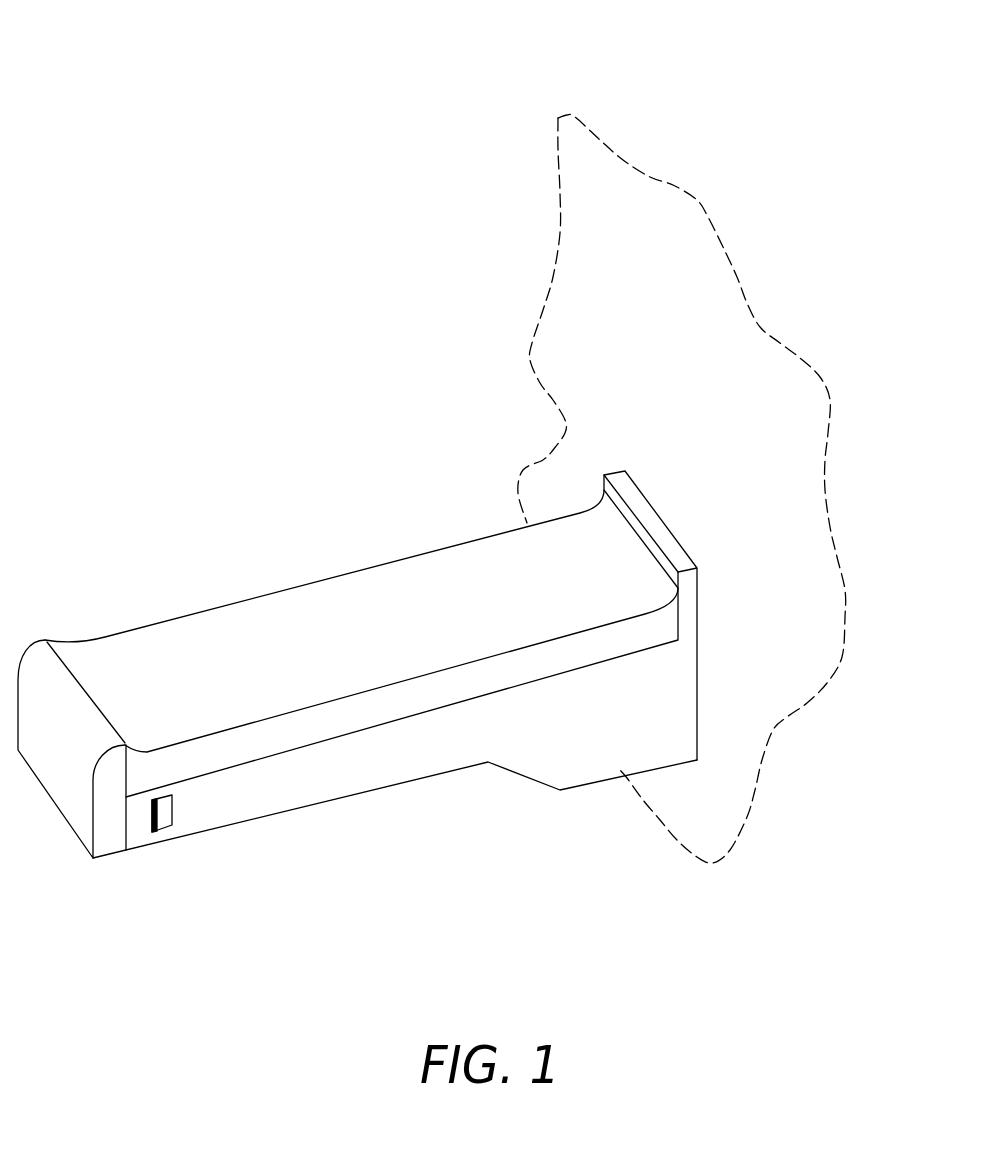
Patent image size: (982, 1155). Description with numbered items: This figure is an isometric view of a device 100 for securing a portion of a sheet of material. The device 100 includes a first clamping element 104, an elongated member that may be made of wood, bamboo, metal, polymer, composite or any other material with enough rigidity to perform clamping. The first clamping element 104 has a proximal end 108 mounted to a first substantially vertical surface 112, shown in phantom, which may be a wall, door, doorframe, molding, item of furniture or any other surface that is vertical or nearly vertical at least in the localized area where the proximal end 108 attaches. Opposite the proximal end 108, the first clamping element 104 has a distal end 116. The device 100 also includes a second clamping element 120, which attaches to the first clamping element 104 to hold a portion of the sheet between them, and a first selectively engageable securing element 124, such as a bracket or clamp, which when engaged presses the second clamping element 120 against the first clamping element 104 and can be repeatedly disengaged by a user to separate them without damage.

The device 100 is at (247, 96).
The first clamping element 104 is at (570, 742).
The proximal end 108 is at (697, 702).
The first substantially vertical surface 112 is at (615, 201).
The distal end 116 is at (127, 835).
The second clamping element 120 is at (265, 638).
The first selectively engageable securing element 124 is at (38, 722).